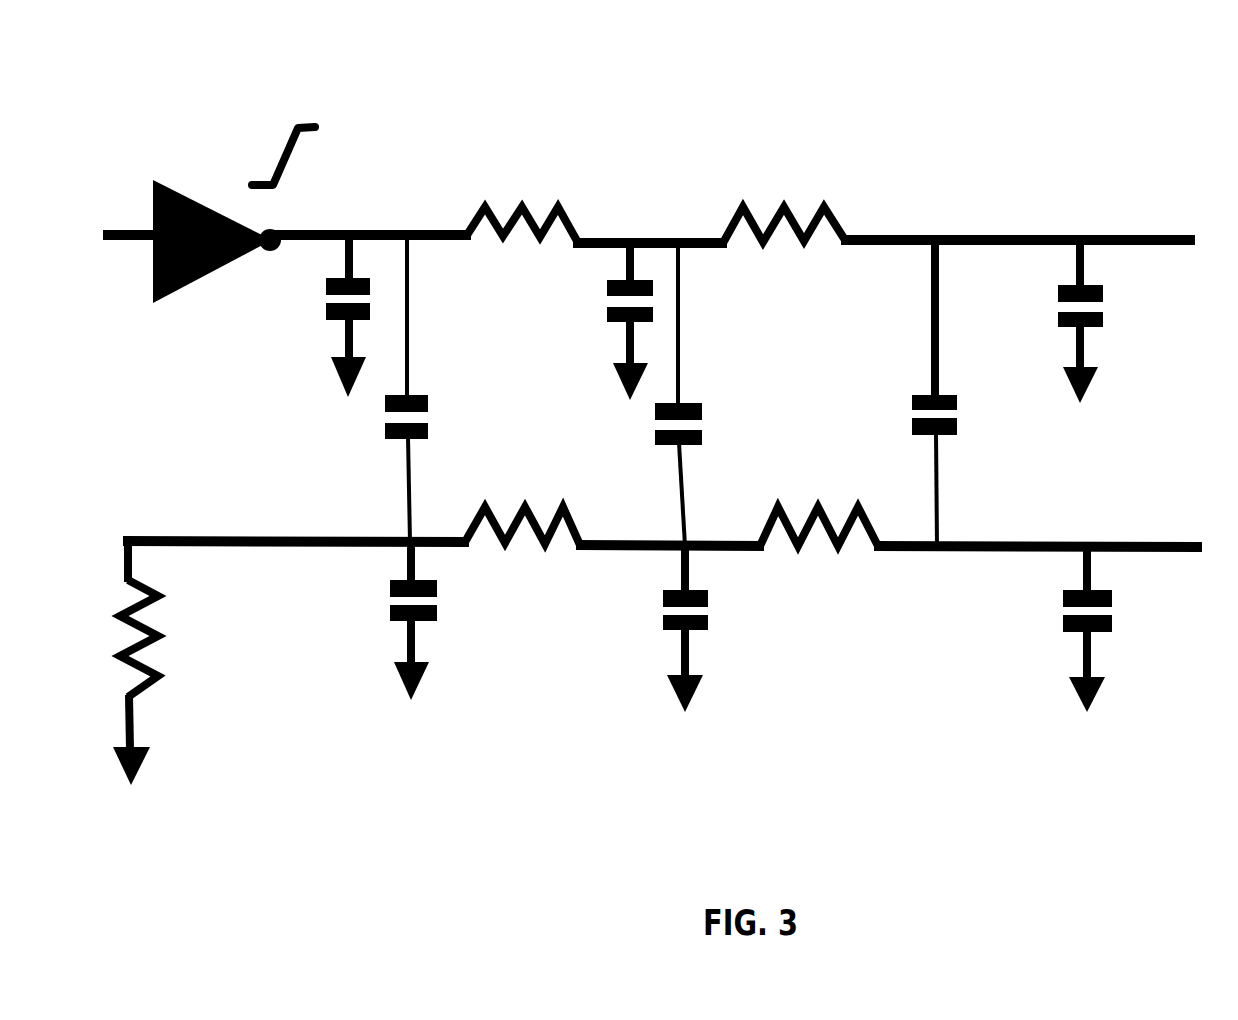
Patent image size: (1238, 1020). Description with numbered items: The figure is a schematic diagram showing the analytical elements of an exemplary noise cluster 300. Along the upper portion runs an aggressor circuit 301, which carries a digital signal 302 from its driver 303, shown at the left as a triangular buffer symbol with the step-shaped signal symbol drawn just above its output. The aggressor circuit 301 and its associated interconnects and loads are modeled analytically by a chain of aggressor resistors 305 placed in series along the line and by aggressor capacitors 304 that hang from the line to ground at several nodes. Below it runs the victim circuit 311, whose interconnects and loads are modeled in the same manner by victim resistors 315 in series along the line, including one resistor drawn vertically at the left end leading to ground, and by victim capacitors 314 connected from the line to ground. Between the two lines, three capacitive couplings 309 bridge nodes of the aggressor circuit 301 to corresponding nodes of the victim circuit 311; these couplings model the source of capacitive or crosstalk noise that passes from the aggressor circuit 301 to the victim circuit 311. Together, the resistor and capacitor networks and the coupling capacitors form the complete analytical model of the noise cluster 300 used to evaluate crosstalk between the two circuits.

The noise cluster 300 is at (782, 145).
The aggressor circuit 301 is at (1142, 238).
The digital signal 302 is at (305, 113).
The driver 303 is at (155, 182).
The aggressor capacitors 304 is at (328, 320).
The aggressor resistors 305 is at (656, 192).
The capacitive couplings 309 is at (387, 438).
The victim circuit 311 is at (1143, 540).
The victim capacitors 314 is at (658, 627).
The victim resistors 315 is at (158, 638).